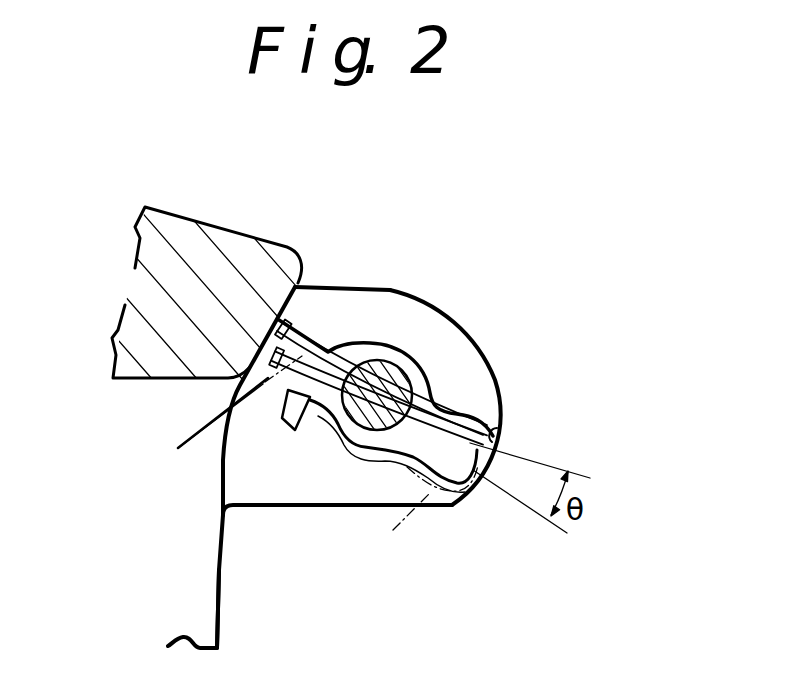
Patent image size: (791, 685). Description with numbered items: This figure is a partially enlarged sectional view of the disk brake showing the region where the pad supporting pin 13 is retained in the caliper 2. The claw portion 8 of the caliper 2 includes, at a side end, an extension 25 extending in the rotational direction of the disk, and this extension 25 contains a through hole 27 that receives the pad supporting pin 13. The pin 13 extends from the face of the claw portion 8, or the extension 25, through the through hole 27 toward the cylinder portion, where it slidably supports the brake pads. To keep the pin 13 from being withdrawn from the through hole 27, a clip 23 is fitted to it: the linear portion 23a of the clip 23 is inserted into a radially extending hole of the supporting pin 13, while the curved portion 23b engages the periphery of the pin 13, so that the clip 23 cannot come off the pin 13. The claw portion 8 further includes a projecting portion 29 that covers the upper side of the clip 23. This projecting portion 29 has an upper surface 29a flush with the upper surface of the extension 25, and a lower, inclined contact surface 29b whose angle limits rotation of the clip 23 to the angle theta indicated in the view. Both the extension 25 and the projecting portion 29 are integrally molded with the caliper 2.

The caliper 2 is at (235, 222).
The claw portion 8 is at (183, 605).
The pad supporting pin 13 is at (416, 366).
The clip 23 is at (467, 513).
The linear portion 23a is at (207, 410).
The curved portion 23b is at (360, 443).
The extension 25 is at (303, 468).
The through hole 27 is at (395, 364).
The projecting portion 29 is at (348, 274).
The upper surface 29a is at (393, 289).
The lower surface 29b is at (492, 432).